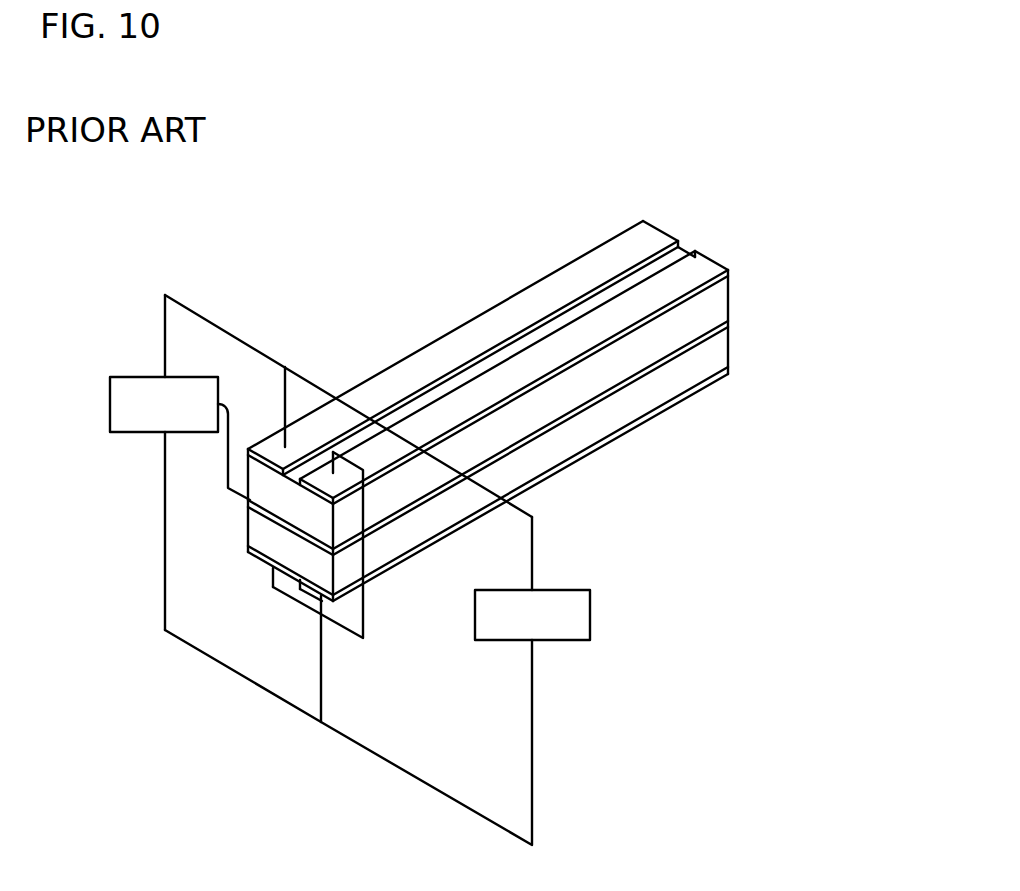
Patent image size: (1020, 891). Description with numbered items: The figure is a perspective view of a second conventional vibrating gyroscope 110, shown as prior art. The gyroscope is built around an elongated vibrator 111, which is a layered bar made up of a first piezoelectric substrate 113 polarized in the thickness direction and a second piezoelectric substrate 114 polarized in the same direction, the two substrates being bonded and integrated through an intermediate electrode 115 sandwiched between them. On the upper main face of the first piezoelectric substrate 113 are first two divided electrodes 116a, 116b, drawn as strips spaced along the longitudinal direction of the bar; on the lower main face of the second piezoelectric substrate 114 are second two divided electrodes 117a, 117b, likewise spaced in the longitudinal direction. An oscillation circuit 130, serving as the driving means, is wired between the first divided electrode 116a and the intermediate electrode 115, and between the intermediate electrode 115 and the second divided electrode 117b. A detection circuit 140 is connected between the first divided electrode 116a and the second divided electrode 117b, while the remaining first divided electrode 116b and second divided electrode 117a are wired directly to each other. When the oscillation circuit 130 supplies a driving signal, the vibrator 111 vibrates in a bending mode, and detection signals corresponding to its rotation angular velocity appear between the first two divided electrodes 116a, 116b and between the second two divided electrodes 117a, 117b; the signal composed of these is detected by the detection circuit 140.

The vibrating gyroscope 110 is at (650, 141).
The vibrator 111 is at (645, 220).
The first piezoelectric substrate 113 is at (718, 308).
The second piezoelectric substrate 114 is at (718, 357).
The intermediate electrode 115 is at (728, 326).
The first divided electrode 116a is at (495, 327).
The first divided electrode 116b is at (557, 360).
The second divided electrode 117a is at (262, 559).
The second divided electrode 117b is at (610, 440).
The oscillation circuit 130 is at (122, 377).
The detection circuit 140 is at (592, 632).